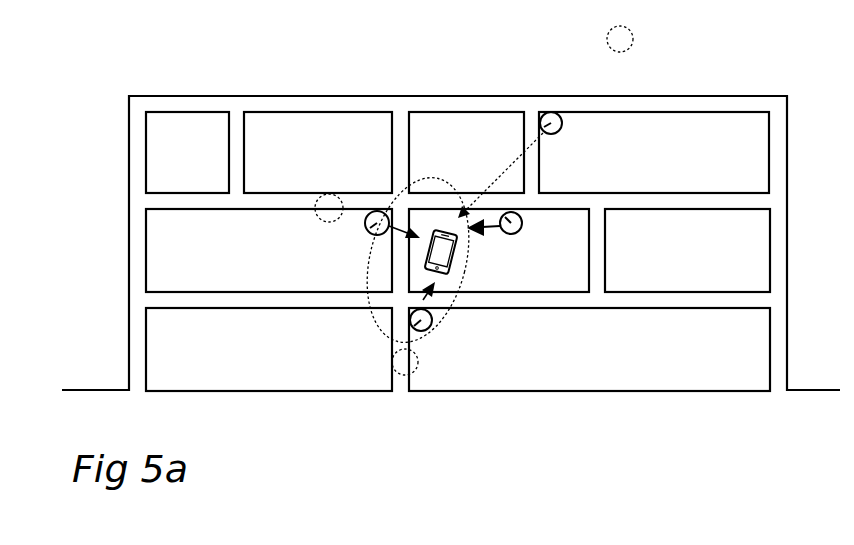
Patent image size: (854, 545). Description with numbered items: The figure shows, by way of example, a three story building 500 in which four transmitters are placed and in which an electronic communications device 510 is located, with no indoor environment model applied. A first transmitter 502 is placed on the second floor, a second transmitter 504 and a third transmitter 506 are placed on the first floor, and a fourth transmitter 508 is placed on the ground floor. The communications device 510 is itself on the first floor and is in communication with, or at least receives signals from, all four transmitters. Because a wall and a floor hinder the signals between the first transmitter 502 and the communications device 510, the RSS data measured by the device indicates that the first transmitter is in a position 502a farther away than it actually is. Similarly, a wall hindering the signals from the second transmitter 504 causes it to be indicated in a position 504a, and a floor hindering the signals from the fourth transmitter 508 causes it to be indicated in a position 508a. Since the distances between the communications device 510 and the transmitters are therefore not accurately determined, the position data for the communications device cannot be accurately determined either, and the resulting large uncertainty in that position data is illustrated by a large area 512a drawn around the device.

The three story building 500 is at (96, 240).
The first transmitter 502 is at (562, 119).
The indicated position of first transmitter 502a is at (630, 40).
The second transmitter 504 is at (365, 228).
The indicated position of second transmitter 504a is at (330, 195).
The third transmitter 506 is at (519, 216).
The fourth transmitter 508 is at (440, 333).
The indicated position of fourth transmitter 508a is at (392, 366).
The communications device 510 is at (453, 248).
The large area 512a is at (440, 333).